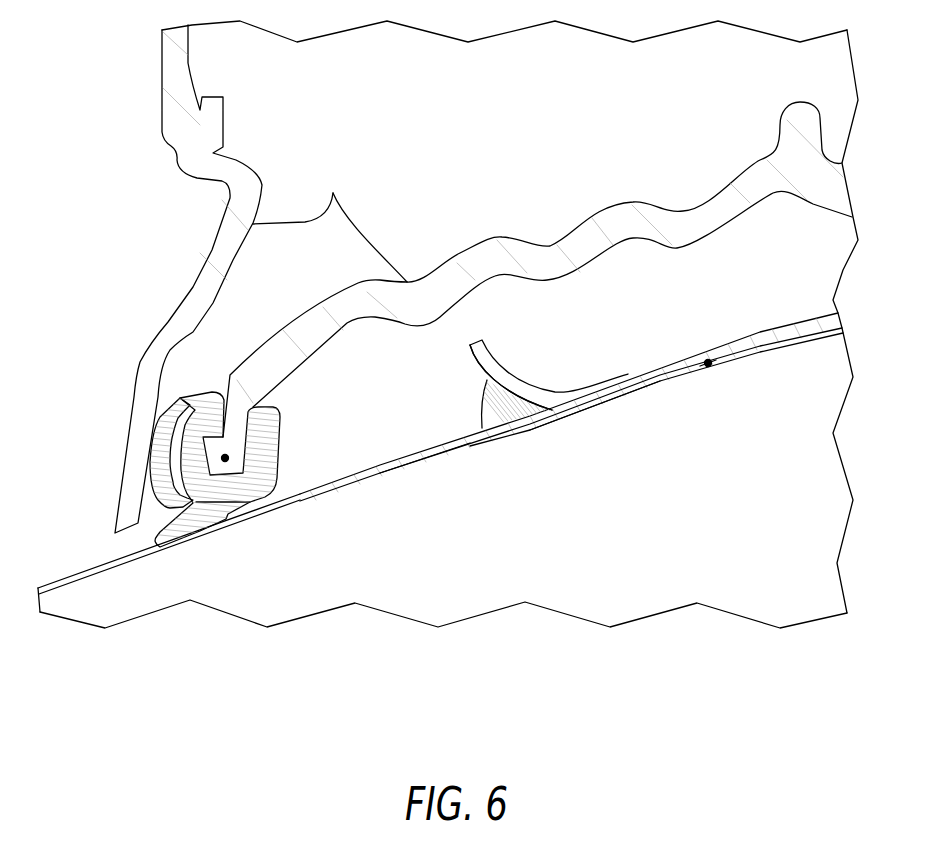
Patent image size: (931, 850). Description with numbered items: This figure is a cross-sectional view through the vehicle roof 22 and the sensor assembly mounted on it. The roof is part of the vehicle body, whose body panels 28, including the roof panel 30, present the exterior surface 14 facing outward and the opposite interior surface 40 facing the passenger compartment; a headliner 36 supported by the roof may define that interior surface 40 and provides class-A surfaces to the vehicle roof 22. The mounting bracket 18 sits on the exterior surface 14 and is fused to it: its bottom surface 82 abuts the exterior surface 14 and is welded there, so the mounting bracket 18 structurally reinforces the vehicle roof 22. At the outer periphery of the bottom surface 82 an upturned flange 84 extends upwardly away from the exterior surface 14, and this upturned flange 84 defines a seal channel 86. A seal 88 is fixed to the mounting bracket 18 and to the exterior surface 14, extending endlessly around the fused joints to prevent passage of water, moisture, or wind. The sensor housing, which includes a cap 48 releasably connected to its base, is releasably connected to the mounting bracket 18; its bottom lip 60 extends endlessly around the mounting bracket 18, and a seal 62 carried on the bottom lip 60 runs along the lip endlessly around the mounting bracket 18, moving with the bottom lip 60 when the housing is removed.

The exterior surface 14 is at (361, 472).
The mounting bracket 18 is at (668, 357).
The vehicle roof 22 is at (119, 570).
The body panels 28 is at (88, 570).
The roof panel 30 is at (56, 594).
The headliner 36 is at (592, 407).
The interior surface 40 is at (387, 476).
The cap 48 is at (336, 196).
The bottom lip 60 is at (222, 459).
The seal 62 is at (278, 484).
The bottom surface 82 is at (709, 367).
The upturned flange 84 is at (514, 376).
The seal channel 86 is at (486, 380).
The seal 88 is at (481, 409).